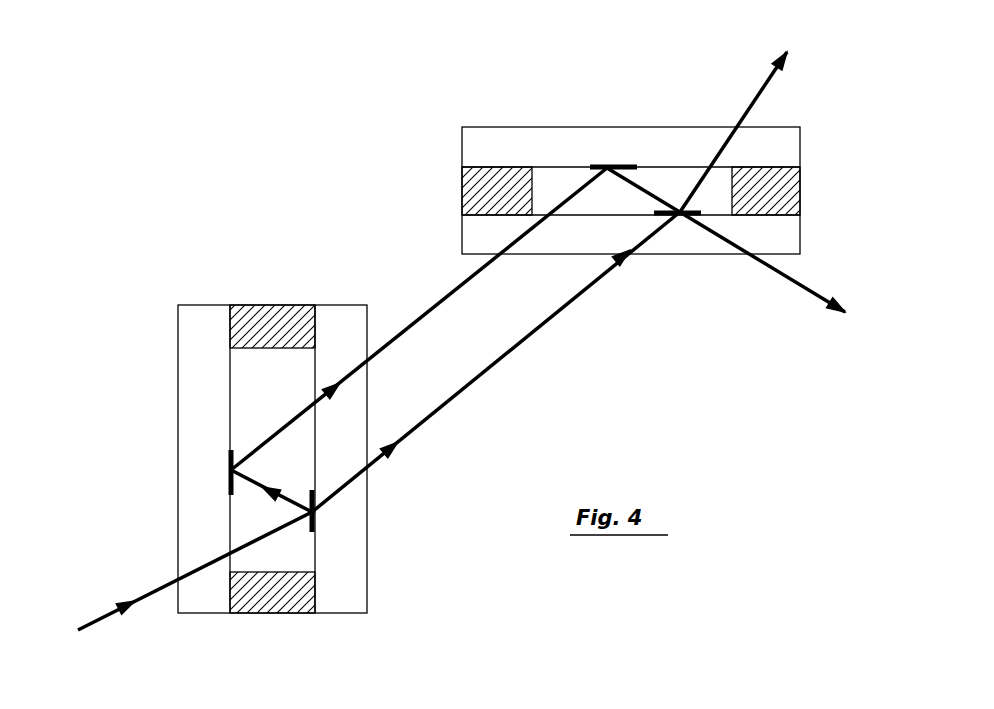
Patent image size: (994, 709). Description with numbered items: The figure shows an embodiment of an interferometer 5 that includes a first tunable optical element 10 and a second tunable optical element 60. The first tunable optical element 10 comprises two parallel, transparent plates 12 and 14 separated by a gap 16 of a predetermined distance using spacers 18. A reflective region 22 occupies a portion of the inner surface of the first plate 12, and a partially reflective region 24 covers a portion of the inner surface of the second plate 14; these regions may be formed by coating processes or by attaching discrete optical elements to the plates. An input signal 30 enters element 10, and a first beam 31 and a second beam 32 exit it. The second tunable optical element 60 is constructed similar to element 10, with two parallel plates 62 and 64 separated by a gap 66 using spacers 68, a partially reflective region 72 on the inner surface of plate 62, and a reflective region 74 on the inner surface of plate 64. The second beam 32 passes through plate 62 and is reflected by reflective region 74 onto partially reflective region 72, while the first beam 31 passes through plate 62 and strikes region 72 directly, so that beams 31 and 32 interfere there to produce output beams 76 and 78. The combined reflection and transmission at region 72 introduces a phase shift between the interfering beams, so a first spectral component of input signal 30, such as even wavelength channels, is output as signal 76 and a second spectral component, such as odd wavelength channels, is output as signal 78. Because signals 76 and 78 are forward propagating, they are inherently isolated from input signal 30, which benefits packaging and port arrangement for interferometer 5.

The interferometer 5 is at (232, 205).
The first tunable optical element 10 is at (160, 324).
The first plate 12 is at (200, 315).
The second plate 14 is at (336, 315).
The gap 16 is at (294, 555).
The spacers 18 is at (263, 595).
The reflective region 22 is at (229, 460).
The partially reflective region 24 is at (314, 512).
The input signal 30 is at (158, 582).
The first beam 31 is at (477, 345).
The second beam 32 is at (438, 336).
The second tunable optical element 60 is at (564, 118).
The first plate 62 is at (803, 236).
The second plate 64 is at (803, 152).
The gap 66 is at (727, 198).
The spacers 68 is at (495, 182).
The partially reflective region 72 is at (678, 214).
The reflective region 74 is at (610, 167).
The output beam 76 is at (769, 270).
The output beam 78 is at (750, 100).